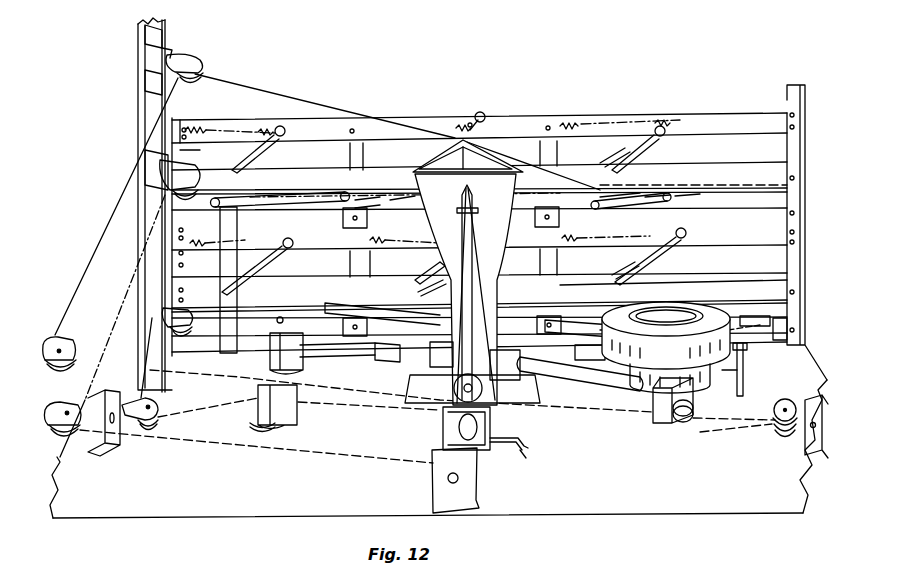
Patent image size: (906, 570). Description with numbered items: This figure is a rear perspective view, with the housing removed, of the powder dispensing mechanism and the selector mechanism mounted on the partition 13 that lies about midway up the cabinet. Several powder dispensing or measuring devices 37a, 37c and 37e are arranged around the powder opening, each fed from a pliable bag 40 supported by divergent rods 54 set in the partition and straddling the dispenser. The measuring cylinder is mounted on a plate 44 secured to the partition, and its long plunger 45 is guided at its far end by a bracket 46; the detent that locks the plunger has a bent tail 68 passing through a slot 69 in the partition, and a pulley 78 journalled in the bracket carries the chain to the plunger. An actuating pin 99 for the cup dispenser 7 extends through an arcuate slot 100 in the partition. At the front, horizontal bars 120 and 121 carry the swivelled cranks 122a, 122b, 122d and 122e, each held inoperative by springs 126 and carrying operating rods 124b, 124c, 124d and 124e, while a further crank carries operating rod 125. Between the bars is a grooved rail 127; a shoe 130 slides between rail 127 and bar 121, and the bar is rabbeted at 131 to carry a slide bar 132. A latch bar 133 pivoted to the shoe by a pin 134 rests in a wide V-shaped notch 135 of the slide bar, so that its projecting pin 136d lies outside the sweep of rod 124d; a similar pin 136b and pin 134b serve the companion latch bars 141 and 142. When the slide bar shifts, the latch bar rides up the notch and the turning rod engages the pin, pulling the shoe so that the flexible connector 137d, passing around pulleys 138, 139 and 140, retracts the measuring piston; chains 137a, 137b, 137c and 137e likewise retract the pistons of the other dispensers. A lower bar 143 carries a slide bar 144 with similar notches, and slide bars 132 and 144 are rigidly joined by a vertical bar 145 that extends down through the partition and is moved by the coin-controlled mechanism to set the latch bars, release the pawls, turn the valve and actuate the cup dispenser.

The cup dispenser 7 is at (712, 310).
The partition 13 is at (226, 489).
The powder dispensing device 37a is at (362, 353).
The powder dispensing device 37c is at (452, 398).
The powder dispensing device 37e is at (595, 361).
The bag 40 is at (452, 206).
The plate 44 is at (410, 378).
The plunger 45 is at (459, 425).
The bracket 46 is at (297, 404).
The divergent rods 54 is at (464, 247).
The detent tail 68 is at (520, 444).
The slot 69 is at (522, 455).
The pulley 78 is at (470, 442).
The actuating pin 99 is at (745, 366).
The arcuate slot 100 is at (725, 380).
The horizontal bar 120 is at (720, 115).
The horizontal bar 121 is at (748, 239).
The crank 122a is at (415, 273).
The crank 122b is at (264, 154).
The crank 122d is at (611, 149).
The crank 122e is at (612, 273).
The operating rod 124b is at (248, 154).
The operating rod 124c is at (482, 130).
The operating rod 124d is at (643, 151).
The operating rod 124e is at (645, 264).
The operating rod 125 is at (258, 267).
The springs 126 is at (218, 128).
The rail 127 is at (742, 166).
The shoe 130 is at (632, 195).
The rabbet 131 is at (776, 209).
The slide bar 132 is at (712, 208).
The latch bar 133 is at (667, 195).
The pin 134 is at (615, 208).
The pin 134b is at (255, 195).
The V-shaped notch 135 is at (692, 200).
The projecting pin 136b is at (272, 207).
The projecting pin 136d is at (655, 207).
The chain 137a is at (198, 330).
The chain 137b is at (150, 330).
The chain 137c is at (131, 292).
The flexible connector 137d is at (305, 101).
The chain 137e is at (432, 315).
The pulley 138 is at (201, 66).
The pulley 139 is at (62, 343).
The pulley 140 is at (797, 435).
The latch bar 141 is at (413, 210).
The latch bar 142 is at (254, 207).
The lower bar 143 is at (343, 326).
The slide bar 144 is at (268, 348).
The vertical bar 145 is at (232, 300).